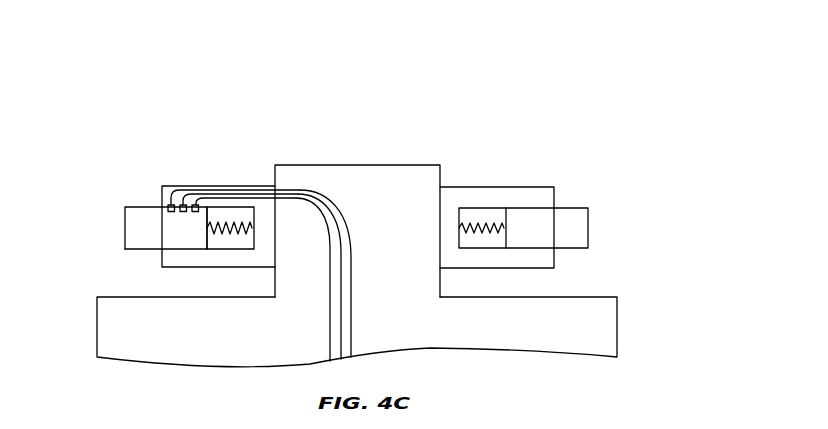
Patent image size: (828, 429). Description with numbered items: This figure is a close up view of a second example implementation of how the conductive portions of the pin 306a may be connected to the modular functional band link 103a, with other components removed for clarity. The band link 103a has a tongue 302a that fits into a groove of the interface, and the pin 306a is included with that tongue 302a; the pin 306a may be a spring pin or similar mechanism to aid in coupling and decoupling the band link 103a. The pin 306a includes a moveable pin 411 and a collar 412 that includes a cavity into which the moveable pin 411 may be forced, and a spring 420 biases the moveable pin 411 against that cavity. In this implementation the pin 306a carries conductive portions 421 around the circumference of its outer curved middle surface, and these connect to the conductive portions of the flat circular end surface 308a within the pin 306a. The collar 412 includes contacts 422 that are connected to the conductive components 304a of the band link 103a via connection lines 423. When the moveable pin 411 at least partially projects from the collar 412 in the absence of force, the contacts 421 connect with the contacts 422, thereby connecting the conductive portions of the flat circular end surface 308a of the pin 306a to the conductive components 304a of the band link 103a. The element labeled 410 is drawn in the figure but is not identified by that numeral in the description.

The modular functional band link 103a is at (617, 326).
The tongue 302a is at (298, 165).
The conductive components 304a is at (352, 325).
The pin 306a is at (165, 223).
The flat circular end surface 308a is at (125, 239).
The substrate 410 is at (180, 267).
The moveable pin 411 is at (135, 249).
The collar 412 is at (242, 236).
The spring 420 is at (217, 230).
The conductive portions 421 is at (170, 206).
The contacts 422 is at (169, 203).
The connection lines 423 is at (230, 192).